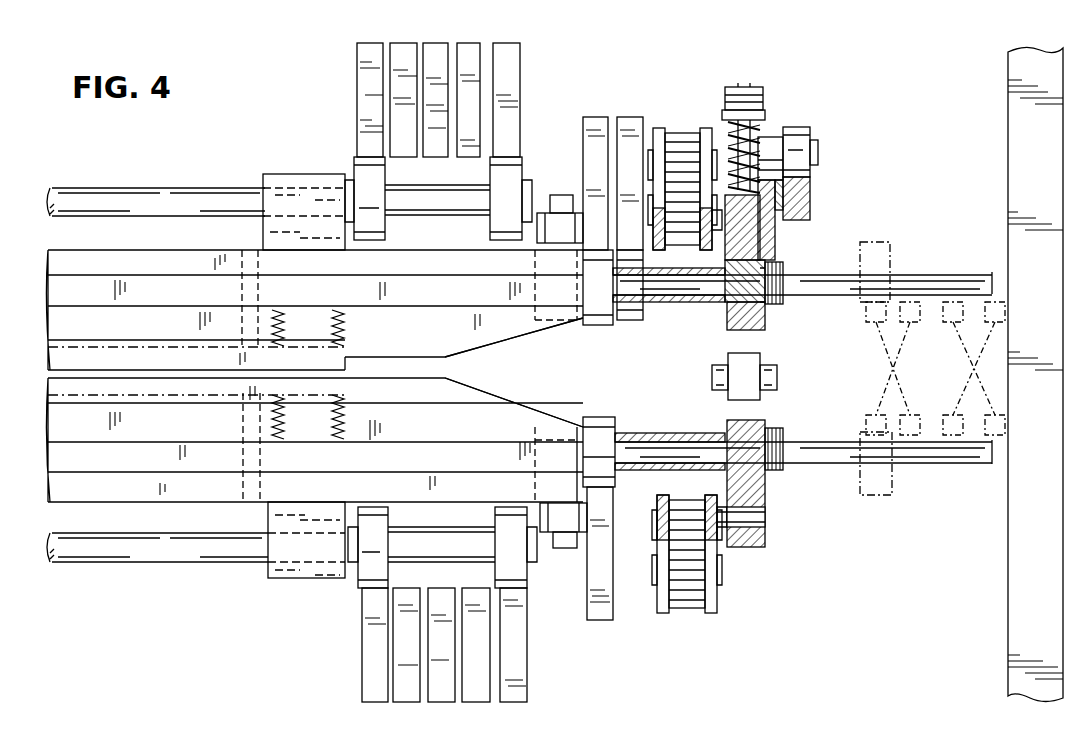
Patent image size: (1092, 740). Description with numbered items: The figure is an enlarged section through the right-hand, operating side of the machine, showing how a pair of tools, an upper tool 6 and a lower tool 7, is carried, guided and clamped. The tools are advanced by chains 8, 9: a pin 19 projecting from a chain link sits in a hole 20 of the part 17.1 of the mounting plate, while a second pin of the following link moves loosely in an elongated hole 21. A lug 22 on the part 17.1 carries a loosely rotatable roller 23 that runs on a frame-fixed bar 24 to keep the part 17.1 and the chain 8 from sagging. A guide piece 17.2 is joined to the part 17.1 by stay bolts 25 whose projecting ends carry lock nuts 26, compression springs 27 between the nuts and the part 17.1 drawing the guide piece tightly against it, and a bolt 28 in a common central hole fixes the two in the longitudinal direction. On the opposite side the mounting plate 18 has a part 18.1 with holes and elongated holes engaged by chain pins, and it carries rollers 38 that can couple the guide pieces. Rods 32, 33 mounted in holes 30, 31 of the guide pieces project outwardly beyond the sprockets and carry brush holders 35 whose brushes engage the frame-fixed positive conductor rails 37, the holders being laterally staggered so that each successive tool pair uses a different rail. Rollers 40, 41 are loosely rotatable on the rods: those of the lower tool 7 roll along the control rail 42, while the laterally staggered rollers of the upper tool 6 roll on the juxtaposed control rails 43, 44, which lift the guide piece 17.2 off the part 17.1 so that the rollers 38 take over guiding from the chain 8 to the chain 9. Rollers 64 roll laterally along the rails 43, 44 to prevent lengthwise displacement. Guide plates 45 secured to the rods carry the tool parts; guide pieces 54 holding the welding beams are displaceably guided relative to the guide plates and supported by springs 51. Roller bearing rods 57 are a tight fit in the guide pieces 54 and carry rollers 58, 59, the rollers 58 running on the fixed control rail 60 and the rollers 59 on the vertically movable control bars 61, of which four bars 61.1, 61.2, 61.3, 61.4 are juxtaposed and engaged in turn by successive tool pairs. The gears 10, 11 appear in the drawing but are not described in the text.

The upper tool 6 is at (774, 65).
The lower tool 7 is at (762, 643).
The chain 8 is at (680, 128).
The chain 9 is at (672, 502).
The upper gear 10 is at (685, 176).
The lower gear 11 is at (711, 553).
The part of mounting plate 17.1 is at (802, 192).
The guide piece 17.2 is at (780, 272).
The mounting plate 18 is at (780, 486).
The part of end plate 18.1 is at (794, 409).
The pin 19 is at (760, 239).
The hole 20 is at (803, 260).
The elongated hole 21 is at (770, 226).
The lug 22 is at (768, 142).
The roller 23 is at (805, 133).
The bar 24 is at (826, 196).
The stay bolt 25 is at (756, 122).
The lock nut 26 is at (760, 111).
The compression spring 27 is at (815, 152).
The bolt 28 is at (749, 253).
The hole 30 is at (689, 369).
The hole 31 is at (727, 315).
The rod 32 is at (802, 391).
The rod 33 is at (813, 286).
The brush holder 35 is at (880, 268).
The positive conductor rail 37 is at (935, 368).
The roller 38 is at (745, 378).
The roller 40 is at (615, 368).
The roller 41 is at (596, 322).
The control rail 42 is at (598, 564).
The control rail 43 is at (590, 132).
The control rail 44 is at (630, 124).
The guide plate 45 is at (458, 393).
The spring 51 is at (344, 326).
The guide piece 54 is at (278, 182).
The roller bearing rod 57 is at (198, 196).
The roller 58 is at (352, 172).
The roller 59 is at (497, 170).
The control rail 60 is at (375, 101).
The control bar 61 is at (512, 92).
The control bar 61.1 is at (395, 82).
The control bar 61.2 is at (433, 55).
The control bar 61.3 is at (470, 53).
The control bar 61.4 is at (505, 73).
The roller 64 is at (544, 212).